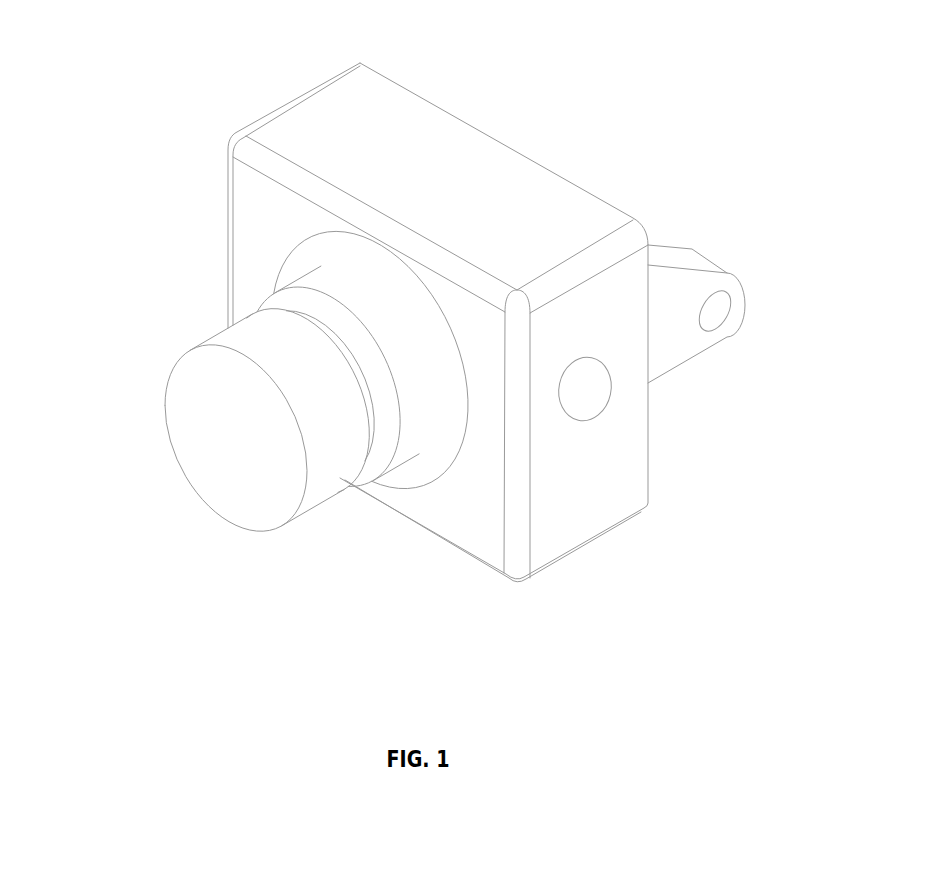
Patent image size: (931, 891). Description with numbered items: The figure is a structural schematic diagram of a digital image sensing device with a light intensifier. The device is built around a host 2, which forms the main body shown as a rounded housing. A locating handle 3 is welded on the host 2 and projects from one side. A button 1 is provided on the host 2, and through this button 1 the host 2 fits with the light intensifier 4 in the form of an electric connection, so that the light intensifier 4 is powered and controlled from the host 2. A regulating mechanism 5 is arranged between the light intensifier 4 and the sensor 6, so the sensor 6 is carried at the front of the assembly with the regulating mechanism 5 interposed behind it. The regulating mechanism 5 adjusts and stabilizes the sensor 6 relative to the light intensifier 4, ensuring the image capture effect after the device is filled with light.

The button 1 is at (597, 398).
The host 2 is at (417, 107).
The locating handle 3 is at (720, 302).
The light intensifier 4 is at (292, 290).
The regulating mechanism 5 is at (372, 436).
The sensor 6 is at (212, 437).